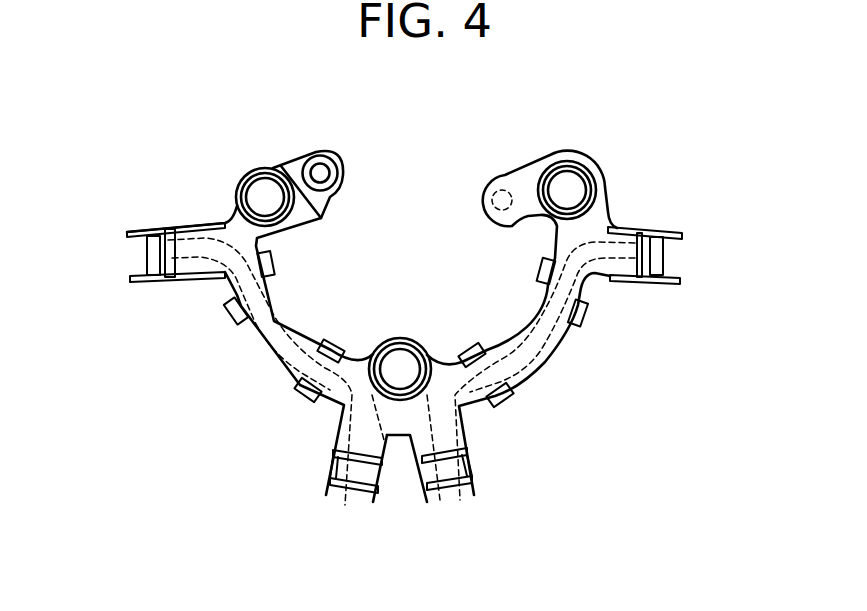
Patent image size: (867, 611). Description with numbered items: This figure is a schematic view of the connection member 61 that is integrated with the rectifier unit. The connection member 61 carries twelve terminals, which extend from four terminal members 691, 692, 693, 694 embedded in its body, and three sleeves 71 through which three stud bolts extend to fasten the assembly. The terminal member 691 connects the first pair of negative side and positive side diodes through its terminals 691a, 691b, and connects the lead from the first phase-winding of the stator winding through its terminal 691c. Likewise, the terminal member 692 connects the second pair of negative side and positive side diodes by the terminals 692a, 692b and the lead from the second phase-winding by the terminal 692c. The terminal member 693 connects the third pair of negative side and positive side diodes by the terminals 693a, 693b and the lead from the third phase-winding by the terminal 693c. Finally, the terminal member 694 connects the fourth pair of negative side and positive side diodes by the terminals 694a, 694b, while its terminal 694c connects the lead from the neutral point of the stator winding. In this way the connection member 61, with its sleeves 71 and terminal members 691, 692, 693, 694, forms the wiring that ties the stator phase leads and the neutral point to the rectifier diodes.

The connection member 61 is at (526, 364).
The sleeves 71 is at (262, 168).
The terminal member 691 is at (631, 282).
The terminal 691a is at (588, 318).
The terminal 691b is at (535, 270).
The terminal 691c is at (670, 252).
The terminal member 692 is at (470, 433).
The terminal 692a is at (512, 408).
The terminal 692b is at (471, 347).
The terminal 692c is at (445, 492).
The terminal member 693 is at (384, 440).
The terminal 693a is at (293, 398).
The terminal 693b is at (338, 346).
The terminal 693c is at (352, 483).
The terminal member 694 is at (190, 257).
The terminal 694a is at (226, 303).
The terminal 694b is at (276, 262).
The terminal 694c is at (146, 253).